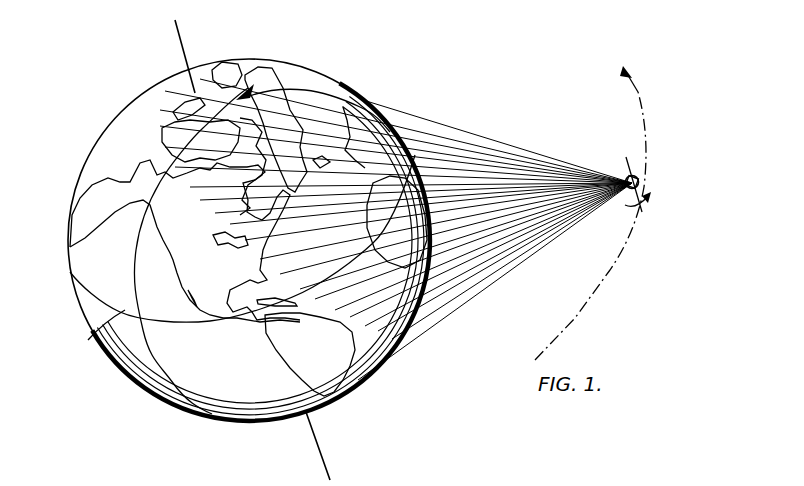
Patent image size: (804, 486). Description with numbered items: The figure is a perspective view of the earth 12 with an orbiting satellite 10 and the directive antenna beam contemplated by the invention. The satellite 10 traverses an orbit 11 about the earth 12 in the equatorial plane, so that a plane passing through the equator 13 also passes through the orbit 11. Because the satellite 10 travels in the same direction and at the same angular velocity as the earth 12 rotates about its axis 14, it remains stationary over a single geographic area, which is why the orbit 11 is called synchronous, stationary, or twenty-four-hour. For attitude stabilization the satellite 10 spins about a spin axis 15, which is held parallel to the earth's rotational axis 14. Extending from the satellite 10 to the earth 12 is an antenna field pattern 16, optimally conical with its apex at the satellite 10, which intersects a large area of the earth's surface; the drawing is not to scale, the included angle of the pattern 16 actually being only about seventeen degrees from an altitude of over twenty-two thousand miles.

The satellite 10 is at (639, 180).
The orbit 11 is at (615, 268).
The earth 12 is at (262, 62).
The equator 13 is at (100, 336).
The axis 14 is at (186, 49).
The spin axis 15 is at (625, 158).
The antenna field pattern 16 is at (467, 140).